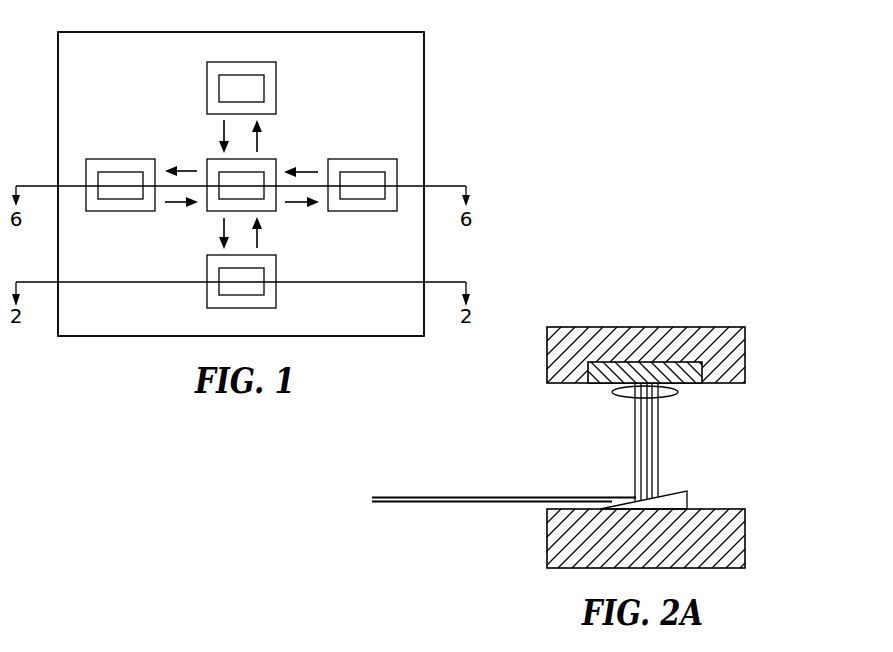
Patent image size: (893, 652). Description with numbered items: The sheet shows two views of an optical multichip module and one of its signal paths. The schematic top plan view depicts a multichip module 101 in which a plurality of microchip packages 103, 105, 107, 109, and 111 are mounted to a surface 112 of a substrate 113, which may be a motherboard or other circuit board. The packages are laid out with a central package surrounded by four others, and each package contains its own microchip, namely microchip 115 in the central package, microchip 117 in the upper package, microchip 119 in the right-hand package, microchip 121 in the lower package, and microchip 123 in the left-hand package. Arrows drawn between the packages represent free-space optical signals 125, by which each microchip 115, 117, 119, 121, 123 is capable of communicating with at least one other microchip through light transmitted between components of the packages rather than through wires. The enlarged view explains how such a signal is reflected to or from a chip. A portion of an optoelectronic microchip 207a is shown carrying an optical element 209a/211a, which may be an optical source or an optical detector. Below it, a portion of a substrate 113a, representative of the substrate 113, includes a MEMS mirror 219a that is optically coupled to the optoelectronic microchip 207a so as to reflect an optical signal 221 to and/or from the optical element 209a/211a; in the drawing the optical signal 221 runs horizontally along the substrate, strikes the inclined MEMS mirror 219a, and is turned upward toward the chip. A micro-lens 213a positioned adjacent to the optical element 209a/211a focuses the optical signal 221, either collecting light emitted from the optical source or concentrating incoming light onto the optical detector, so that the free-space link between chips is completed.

In FIG. 1, the multichip module 101 is at (441, 108).
In FIG. 1, the microchip package 103 is at (277, 163).
In FIG. 1, the microchip package 105 is at (277, 90).
In FIG. 1, the microchip package 107 is at (365, 159).
In FIG. 1, the microchip package 109 is at (277, 257).
In FIG. 1, the microchip package 111 is at (118, 211).
In FIG. 1, the surface 112 is at (69, 98).
In FIG. 1, the substrate 113 is at (110, 67).
In FIG. 1, the microchip 115 is at (253, 199).
In FIG. 1, the microchip 117 is at (218, 81).
In FIG. 1, the microchip 119 is at (358, 199).
In FIG. 1, the microchip 121 is at (264, 292).
In FIG. 1, the microchip 123 is at (125, 172).
In FIG. 1, the free-space optical signals 125 is at (222, 124).
In FIG. 2A, the optoelectronic microchip 207a is at (735, 384).
In FIG. 2A, the optical element 209a is at (672, 362).
In FIG. 2A, the optical element 211a is at (657, 333).
In FIG. 2A, the micro-lens 213a is at (617, 391).
In FIG. 2A, the MEMS mirror 219a is at (688, 492).
In FIG. 2A, the optical signal 221 is at (608, 448).
In FIG. 2A, the substrate 113a is at (547, 525).